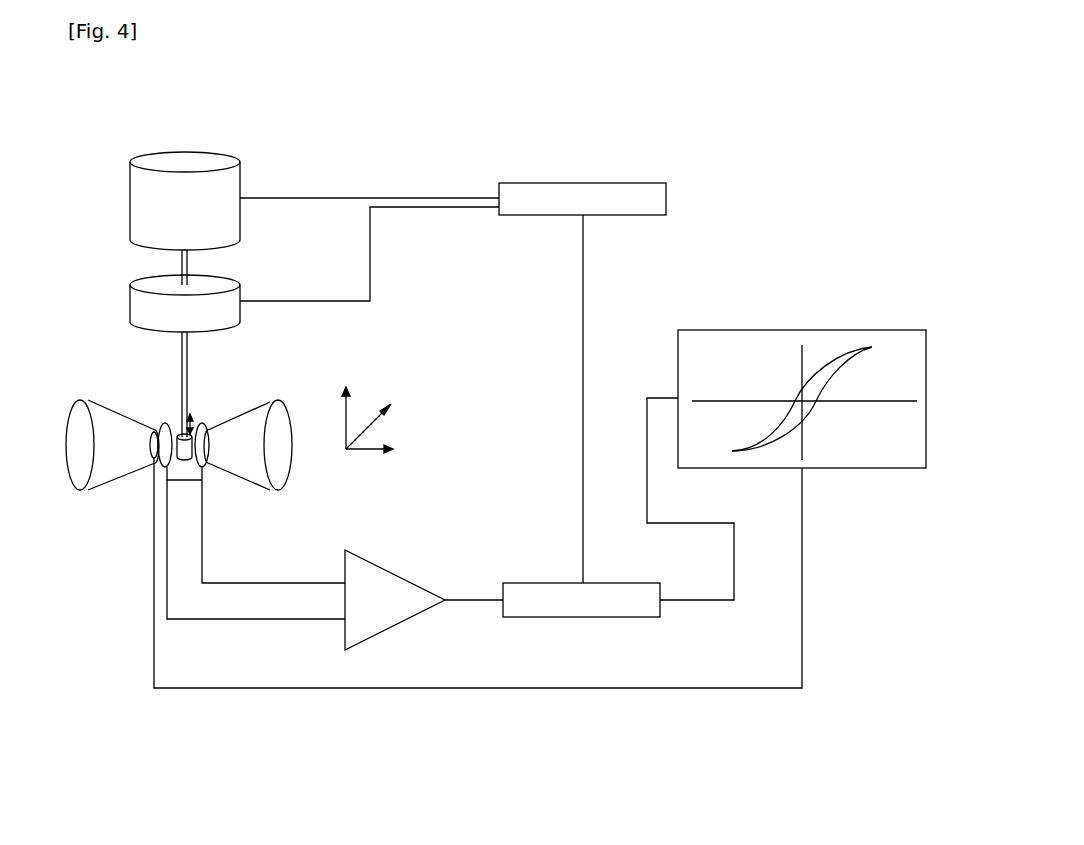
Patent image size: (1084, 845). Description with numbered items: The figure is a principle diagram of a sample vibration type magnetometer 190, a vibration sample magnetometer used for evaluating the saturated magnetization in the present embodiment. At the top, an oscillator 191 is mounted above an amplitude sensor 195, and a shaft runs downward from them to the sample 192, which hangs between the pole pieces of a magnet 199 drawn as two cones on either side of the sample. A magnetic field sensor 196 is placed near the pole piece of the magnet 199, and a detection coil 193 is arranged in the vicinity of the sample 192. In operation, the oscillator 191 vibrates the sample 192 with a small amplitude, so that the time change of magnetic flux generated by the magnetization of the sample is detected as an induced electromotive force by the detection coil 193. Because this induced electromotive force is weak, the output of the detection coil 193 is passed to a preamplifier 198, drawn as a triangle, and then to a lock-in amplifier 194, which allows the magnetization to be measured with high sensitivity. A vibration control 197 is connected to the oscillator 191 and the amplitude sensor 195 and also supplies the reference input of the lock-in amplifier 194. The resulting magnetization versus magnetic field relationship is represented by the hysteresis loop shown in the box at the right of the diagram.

The sample vibration type magnetometer 190 is at (735, 151).
The oscillator 191 is at (232, 184).
The amplitude sensor 195 is at (240, 292).
The sample 192 is at (178, 440).
The magnet 199 is at (92, 428).
The magnetic field sensor 196 is at (154, 452).
The detection coil 193 is at (203, 462).
The preamplifier 198 is at (390, 583).
The lock-in amplifier 194 is at (610, 583).
The vibration control 197 is at (610, 183).